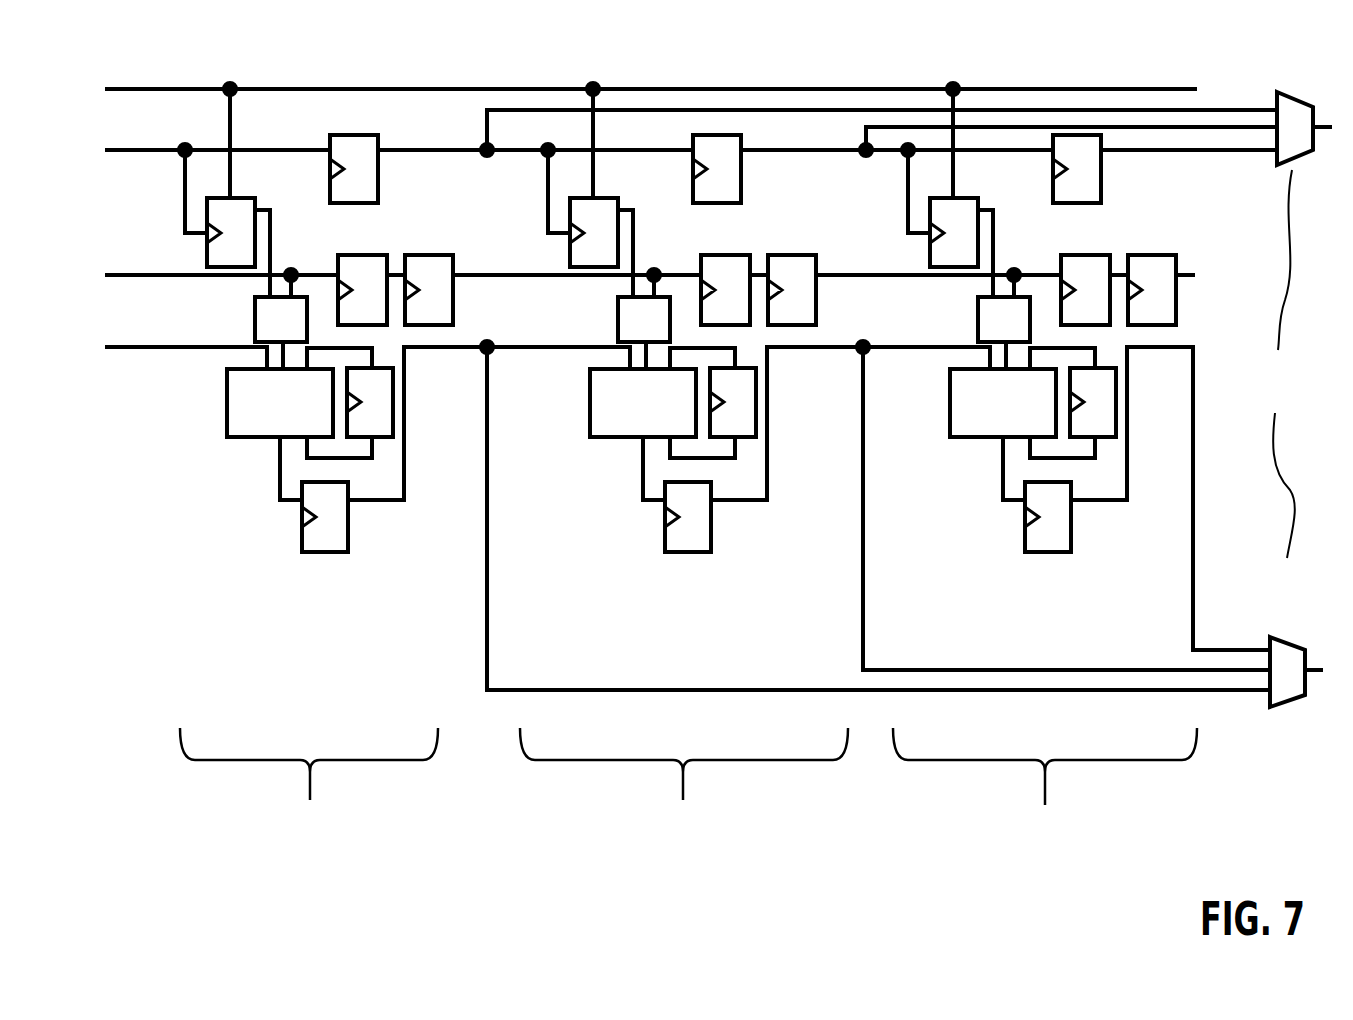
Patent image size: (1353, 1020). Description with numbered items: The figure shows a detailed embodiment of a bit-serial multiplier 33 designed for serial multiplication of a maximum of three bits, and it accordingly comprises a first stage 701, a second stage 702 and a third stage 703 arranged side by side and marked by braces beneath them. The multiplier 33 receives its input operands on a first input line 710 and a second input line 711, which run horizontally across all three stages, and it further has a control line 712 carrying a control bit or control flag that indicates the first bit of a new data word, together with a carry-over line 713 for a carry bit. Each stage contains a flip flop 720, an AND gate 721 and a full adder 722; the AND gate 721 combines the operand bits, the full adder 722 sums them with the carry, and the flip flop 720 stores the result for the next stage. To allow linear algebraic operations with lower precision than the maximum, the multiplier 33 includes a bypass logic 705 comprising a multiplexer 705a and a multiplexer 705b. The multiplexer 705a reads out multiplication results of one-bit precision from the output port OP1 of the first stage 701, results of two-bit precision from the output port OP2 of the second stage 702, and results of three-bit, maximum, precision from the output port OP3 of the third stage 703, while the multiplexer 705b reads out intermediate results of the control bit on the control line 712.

The first input line 710 is at (132, 87).
The second input line 711 is at (115, 274).
The control line 712 is at (138, 149).
The carry input line 713 is at (135, 349).
The flip flop 720 is at (318, 555).
The AND gate 721 is at (255, 318).
The full adder 722 is at (236, 432).
The first stage 701 is at (309, 784).
The second stage 702 is at (684, 784).
The third stage 703 is at (1045, 788).
The bypass logic 705 is at (1305, 402).
The multiplexer 705a is at (1290, 660).
The multiplexer 705b is at (1297, 115).
The bit-serial multiplier 33 is at (1272, 803).
The output port OP1 is at (488, 350).
The output port OP2 is at (866, 350).
The output port OP3 is at (1197, 443).